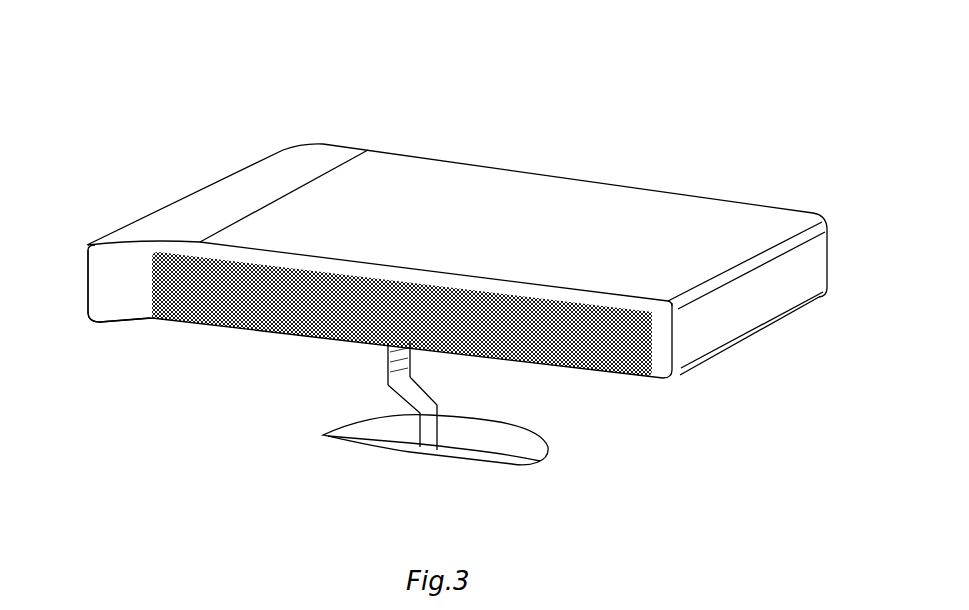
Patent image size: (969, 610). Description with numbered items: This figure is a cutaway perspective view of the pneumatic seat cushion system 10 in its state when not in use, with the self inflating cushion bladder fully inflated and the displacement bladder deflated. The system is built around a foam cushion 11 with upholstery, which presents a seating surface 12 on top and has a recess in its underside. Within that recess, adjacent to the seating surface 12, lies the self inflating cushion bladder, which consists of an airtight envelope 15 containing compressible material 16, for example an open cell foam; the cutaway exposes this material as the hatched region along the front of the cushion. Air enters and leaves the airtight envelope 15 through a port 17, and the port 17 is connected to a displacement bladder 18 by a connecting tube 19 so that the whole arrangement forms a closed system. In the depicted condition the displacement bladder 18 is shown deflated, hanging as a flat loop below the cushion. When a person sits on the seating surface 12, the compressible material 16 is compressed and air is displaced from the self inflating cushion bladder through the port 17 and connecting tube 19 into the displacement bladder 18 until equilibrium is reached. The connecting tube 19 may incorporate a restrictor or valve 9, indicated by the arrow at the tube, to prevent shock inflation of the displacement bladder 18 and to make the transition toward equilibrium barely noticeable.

The restrictor or valve 9 is at (368, 387).
The pneumatic seat cushion system 10 is at (435, 237).
The foam cushion 11 is at (122, 250).
The seating surface 12 is at (570, 229).
The airtight envelope 15 is at (638, 378).
The compressible material 16 is at (305, 328).
The port 17 is at (428, 364).
The displacement bladder 18 is at (430, 472).
The connecting tube 19 is at (448, 401).